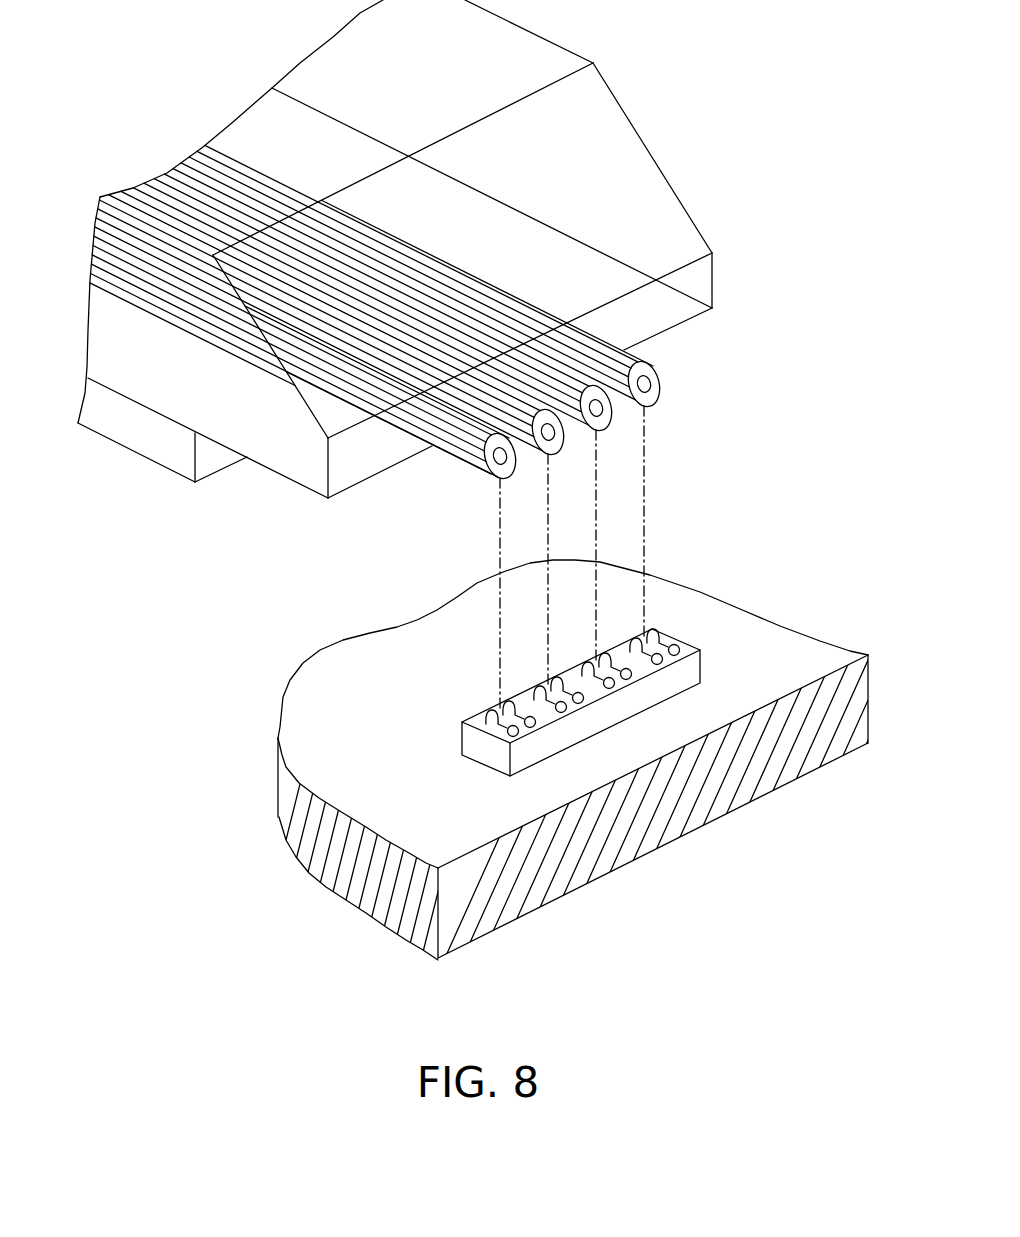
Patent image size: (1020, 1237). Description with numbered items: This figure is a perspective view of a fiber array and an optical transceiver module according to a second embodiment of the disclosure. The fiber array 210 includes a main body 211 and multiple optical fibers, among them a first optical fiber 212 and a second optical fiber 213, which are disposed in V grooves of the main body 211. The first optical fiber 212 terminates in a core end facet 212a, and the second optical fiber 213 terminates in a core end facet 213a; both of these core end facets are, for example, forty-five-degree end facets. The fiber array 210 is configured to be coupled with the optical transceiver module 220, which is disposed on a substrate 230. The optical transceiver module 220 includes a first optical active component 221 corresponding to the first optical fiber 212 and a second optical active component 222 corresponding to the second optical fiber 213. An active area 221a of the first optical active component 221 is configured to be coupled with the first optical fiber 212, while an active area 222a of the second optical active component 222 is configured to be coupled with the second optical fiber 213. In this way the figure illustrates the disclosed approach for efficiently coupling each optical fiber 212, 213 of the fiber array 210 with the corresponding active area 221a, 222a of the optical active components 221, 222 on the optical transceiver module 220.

The fiber array 210 is at (630, 80).
The main body 211 is at (610, 160).
The first optical fiber 212 is at (633, 356).
The core end facet 212a is at (651, 386).
The second optical fiber 213 is at (455, 456).
The core end facet 213a is at (484, 471).
The optical transceiver module 220 is at (657, 687).
The first optical active component 221 is at (672, 632).
The active area 221a is at (644, 641).
The second optical active component 222 is at (467, 725).
The active area 222a is at (499, 713).
The substrate 230 is at (806, 657).